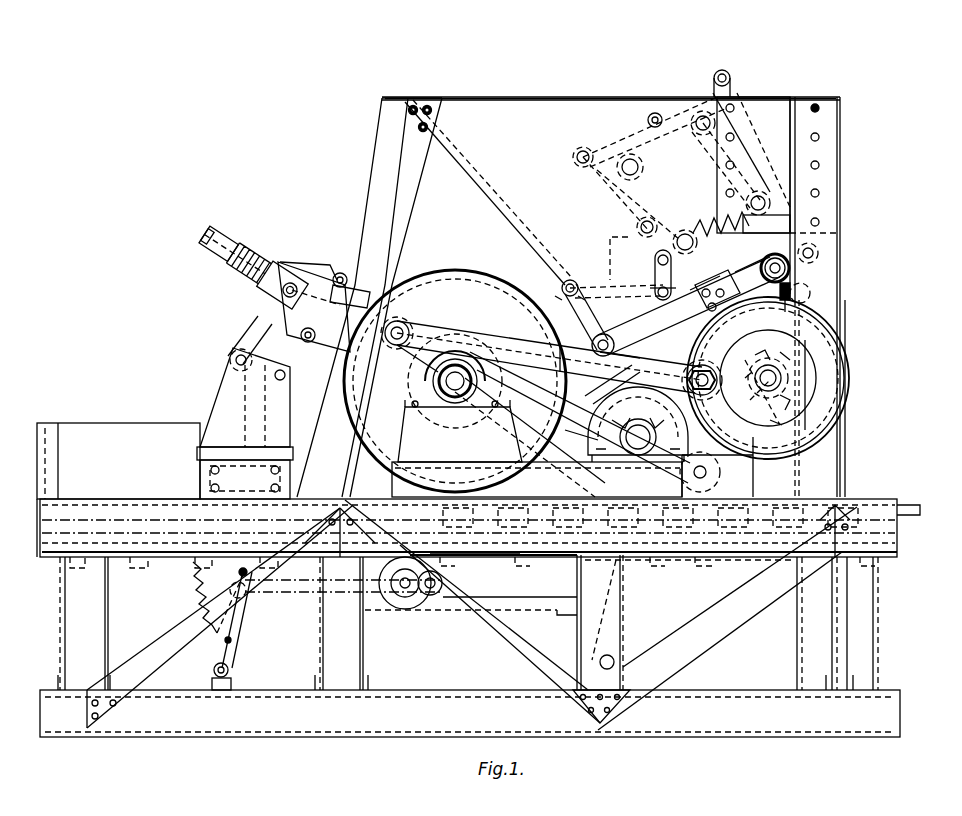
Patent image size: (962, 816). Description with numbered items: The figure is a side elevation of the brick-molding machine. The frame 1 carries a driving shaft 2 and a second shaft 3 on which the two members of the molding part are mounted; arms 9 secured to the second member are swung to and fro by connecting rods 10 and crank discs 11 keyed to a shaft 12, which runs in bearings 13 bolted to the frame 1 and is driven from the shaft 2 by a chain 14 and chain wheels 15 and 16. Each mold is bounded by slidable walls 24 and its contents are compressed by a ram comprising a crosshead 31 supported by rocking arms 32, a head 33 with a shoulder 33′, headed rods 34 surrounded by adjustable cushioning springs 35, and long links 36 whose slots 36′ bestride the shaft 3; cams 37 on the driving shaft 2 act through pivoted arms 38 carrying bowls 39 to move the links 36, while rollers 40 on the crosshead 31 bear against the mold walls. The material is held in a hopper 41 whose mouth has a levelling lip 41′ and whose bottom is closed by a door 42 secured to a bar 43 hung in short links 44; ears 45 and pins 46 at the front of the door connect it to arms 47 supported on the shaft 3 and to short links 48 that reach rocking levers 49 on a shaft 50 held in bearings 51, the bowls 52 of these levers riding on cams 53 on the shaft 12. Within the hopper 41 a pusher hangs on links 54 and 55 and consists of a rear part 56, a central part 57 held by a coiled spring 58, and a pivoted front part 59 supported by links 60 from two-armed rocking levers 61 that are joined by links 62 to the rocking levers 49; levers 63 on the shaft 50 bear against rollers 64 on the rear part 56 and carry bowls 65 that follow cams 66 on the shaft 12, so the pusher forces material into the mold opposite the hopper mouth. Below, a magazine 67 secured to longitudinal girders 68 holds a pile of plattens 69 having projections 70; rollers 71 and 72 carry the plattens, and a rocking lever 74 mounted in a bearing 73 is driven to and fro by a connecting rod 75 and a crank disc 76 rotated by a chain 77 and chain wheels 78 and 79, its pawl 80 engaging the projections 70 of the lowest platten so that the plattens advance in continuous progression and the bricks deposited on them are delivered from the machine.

The frame 1 is at (405, 207).
The driving shaft 2 is at (638, 437).
The second shaft 3 is at (445, 398).
The arms 9 is at (395, 348).
The connecting rods 10 is at (538, 357).
The crank discs 11 is at (830, 382).
The shaft 12 is at (760, 366).
The bearings 13 is at (784, 425).
The chain 14 is at (738, 465).
The chain wheel 15 is at (615, 402).
The chain wheel 16 is at (820, 400).
The slidable walls 24 is at (330, 345).
The crosshead 31 is at (272, 295).
The rocking arms 32 is at (268, 338).
The head 33 is at (350, 297).
The shoulder 33′ is at (325, 260).
The headed rods 34 is at (252, 258).
The adjustable cushioning springs 35 is at (238, 280).
The long links 36 is at (560, 418).
The slots 36′ is at (420, 362).
The cams 37 is at (630, 355).
The pivoted arms 38 is at (660, 588).
The bowls 39 is at (708, 475).
The rollers 40 is at (350, 270).
The hopper 41 is at (528, 98).
The lip 41′ is at (571, 278).
The door 42 is at (600, 286).
The bar 43 is at (700, 295).
The short links 44 is at (655, 265).
The ears 45 is at (620, 322).
The pins 46 is at (562, 286).
The arms 47 is at (520, 332).
The short links 48 is at (578, 348).
The rocking levers 49 is at (675, 342).
The shaft 50 is at (768, 262).
The bearings 51 is at (800, 262).
The bowls 52 is at (708, 284).
The cams 53 is at (696, 362).
The links 54 is at (702, 136).
The links 55 is at (645, 170).
The rear part 56 is at (722, 205).
The central part 57 is at (700, 228).
The coiled spring 58 is at (740, 270).
The front part 59 is at (636, 232).
The links 60 is at (606, 180).
The two-armed rocking levers 61 is at (625, 132).
The links 62 is at (731, 80).
The levers 63 is at (765, 178).
The rollers 64 is at (766, 225).
The bowls 65 is at (803, 291).
The cams 66 is at (838, 333).
The magazine 67 is at (168, 422).
The longitudinal girders 68 is at (690, 571).
The plattens 69 is at (172, 512).
The projections 70 is at (355, 510).
The rollers 71 is at (472, 552).
The rollers 72 is at (142, 558).
The bearing 73 is at (229, 674).
The rocking lever 74 is at (235, 638).
The connecting rod 75 is at (295, 594).
The crank disc 76 is at (398, 605).
The chain 77 is at (470, 588).
The chain wheel 78 is at (612, 440).
The chain wheel 79 is at (427, 600).
The pawl 80 is at (240, 578).